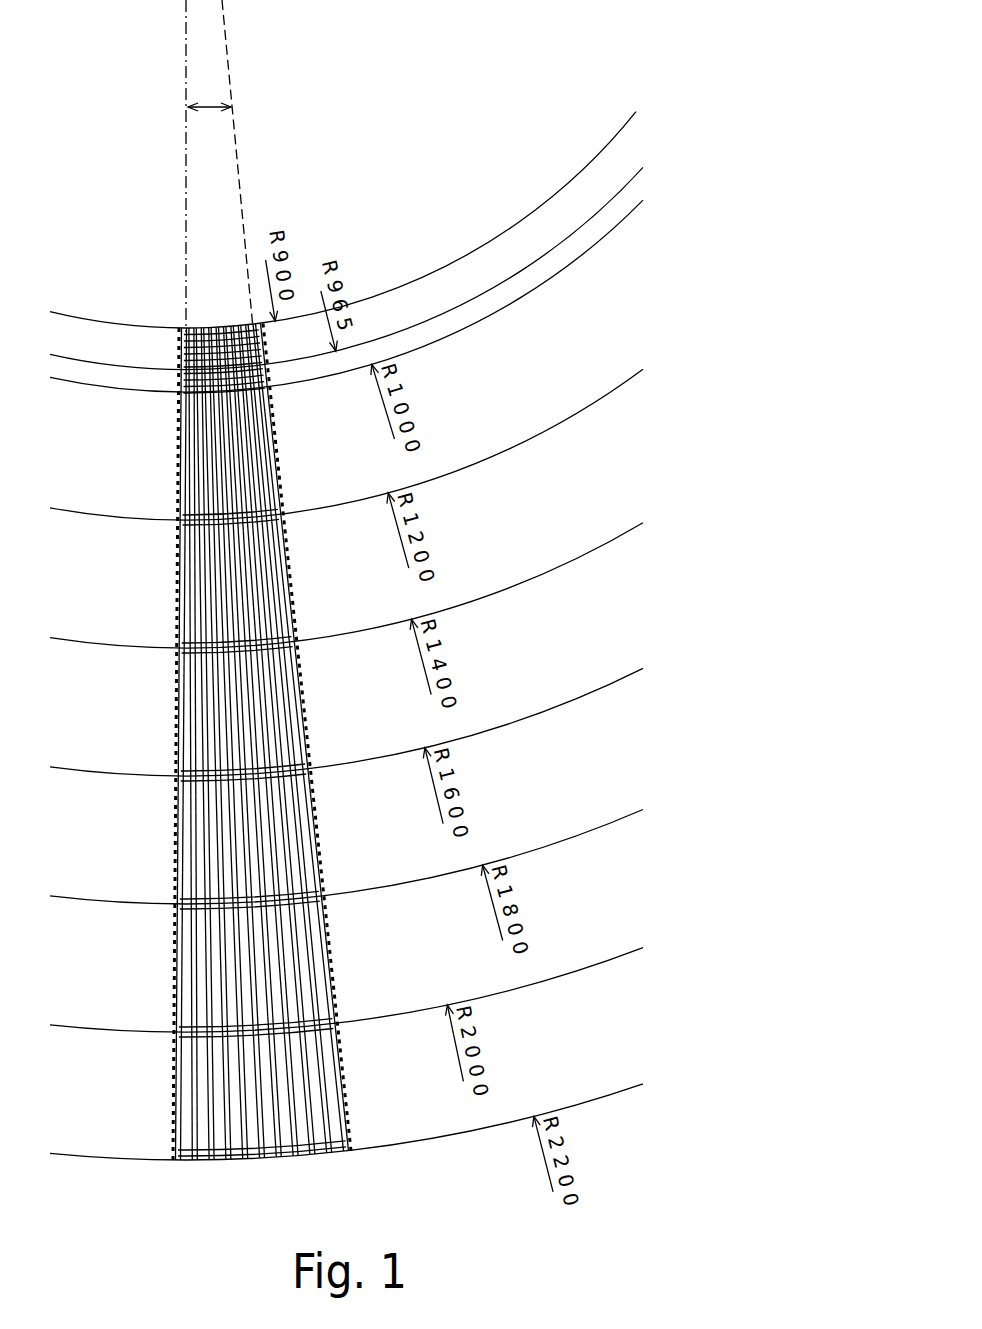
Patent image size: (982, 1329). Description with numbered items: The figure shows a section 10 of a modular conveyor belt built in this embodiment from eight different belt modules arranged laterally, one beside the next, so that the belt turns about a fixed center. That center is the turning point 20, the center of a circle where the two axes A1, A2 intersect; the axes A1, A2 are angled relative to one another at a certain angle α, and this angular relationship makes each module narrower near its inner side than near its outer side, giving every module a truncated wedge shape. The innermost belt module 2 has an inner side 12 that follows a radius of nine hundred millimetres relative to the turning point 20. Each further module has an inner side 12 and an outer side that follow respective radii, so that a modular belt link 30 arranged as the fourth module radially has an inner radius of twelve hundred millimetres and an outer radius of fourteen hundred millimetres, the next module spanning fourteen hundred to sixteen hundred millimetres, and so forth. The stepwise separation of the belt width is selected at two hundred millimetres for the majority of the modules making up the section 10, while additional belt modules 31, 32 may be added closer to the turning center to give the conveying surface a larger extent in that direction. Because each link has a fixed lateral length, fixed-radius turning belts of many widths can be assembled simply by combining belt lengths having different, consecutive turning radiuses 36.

The innermost belt module 2 is at (181, 343).
The section 10 is at (145, 715).
The inner side 12 is at (197, 328).
The turning point 20 is at (212, 0).
The modular belt link 30 is at (183, 590).
The additional belt module 31 is at (182, 385).
The additional belt module 32 is at (182, 360).
The turning radiuses 36 is at (592, 403).
The axis A1 is at (187, 128).
The axis A2 is at (233, 128).